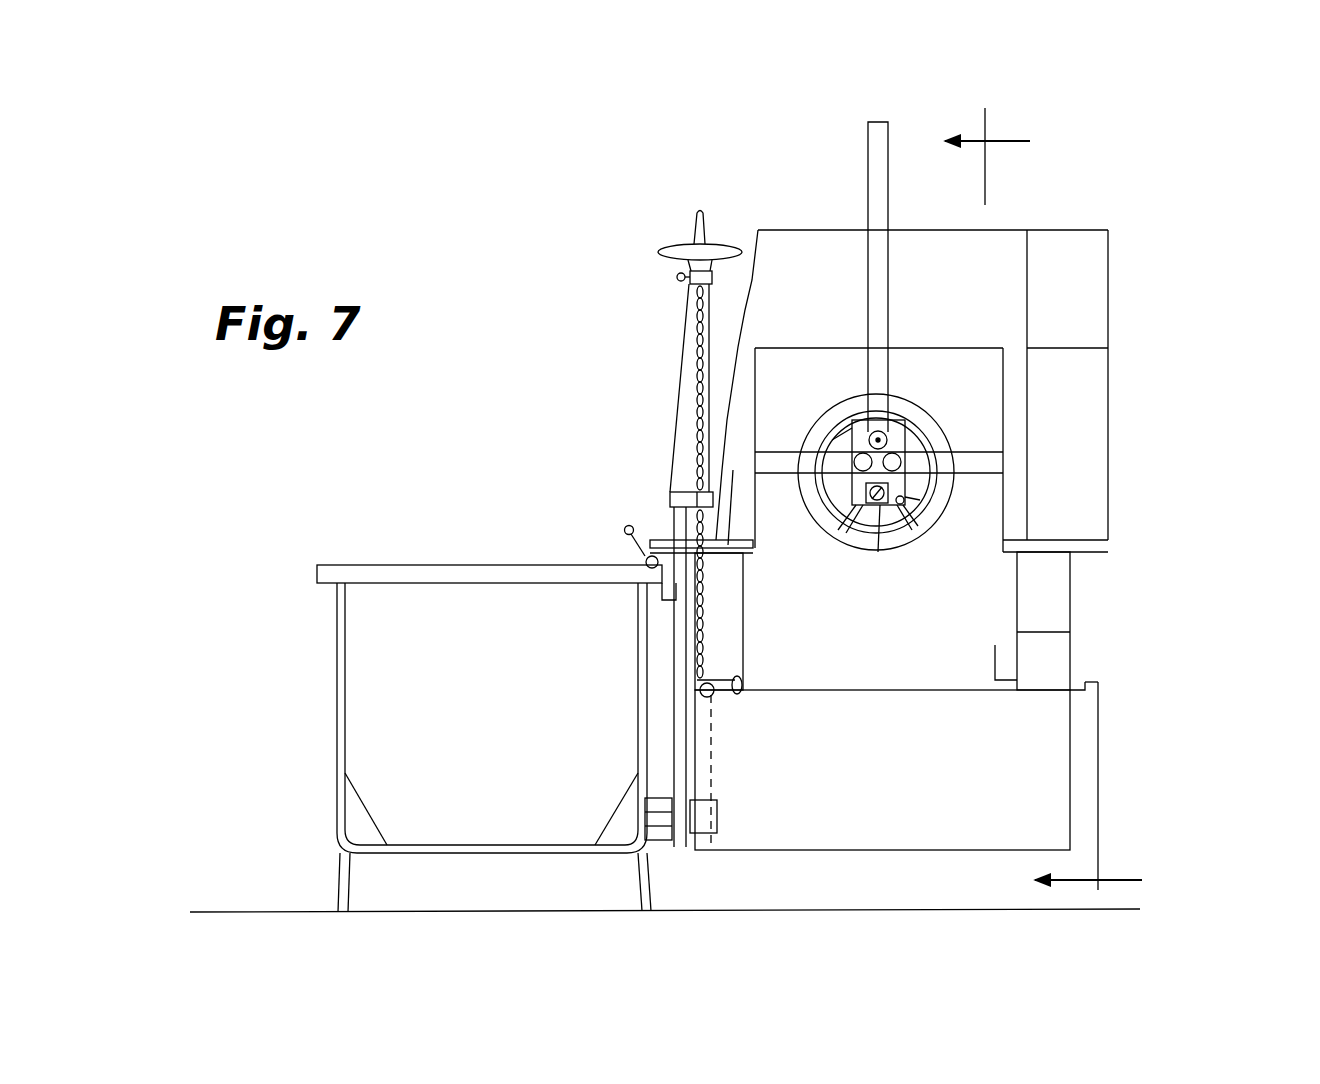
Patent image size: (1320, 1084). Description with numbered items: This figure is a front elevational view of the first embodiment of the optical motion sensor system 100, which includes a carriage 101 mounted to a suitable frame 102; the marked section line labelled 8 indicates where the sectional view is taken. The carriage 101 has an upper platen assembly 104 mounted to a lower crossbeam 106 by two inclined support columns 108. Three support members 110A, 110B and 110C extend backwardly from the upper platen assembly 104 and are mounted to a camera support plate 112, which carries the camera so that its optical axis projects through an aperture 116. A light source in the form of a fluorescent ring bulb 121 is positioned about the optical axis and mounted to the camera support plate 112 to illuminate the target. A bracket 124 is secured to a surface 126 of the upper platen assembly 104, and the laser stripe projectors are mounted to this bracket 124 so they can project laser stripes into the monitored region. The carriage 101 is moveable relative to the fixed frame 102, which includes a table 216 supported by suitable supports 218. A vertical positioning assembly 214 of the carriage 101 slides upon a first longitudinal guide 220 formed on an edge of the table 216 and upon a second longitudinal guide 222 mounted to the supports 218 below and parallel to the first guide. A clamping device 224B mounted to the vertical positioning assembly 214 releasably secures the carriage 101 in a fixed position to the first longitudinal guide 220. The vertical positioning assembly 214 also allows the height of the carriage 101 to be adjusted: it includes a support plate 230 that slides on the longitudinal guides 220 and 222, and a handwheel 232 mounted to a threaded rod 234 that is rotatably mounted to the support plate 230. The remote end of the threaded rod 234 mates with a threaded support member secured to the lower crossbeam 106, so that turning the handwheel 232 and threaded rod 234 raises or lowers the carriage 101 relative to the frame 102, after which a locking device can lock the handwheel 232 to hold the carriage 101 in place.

The optical motion sensor system 100 is at (526, 202).
The carriage 101 is at (1134, 226).
The frame 102 is at (388, 541).
The upper platen assembly 104 is at (1110, 388).
The lower crossbeam 106 is at (900, 690).
The inclined support columns 108 is at (1072, 603).
The support member 110A is at (892, 395).
The support member 110B is at (774, 450).
The support member 110C is at (983, 493).
The camera support plate 112 is at (880, 548).
The aperture 116 is at (890, 492).
The fluorescent ring bulb 121 is at (952, 428).
The bracket 124 is at (890, 155).
The surface 126 is at (963, 292).
The vertical positioning assembly 214 is at (636, 308).
The table 216 is at (478, 562).
The supports 218 is at (347, 683).
The first longitudinal guide 220 is at (660, 590).
The second longitudinal guide 222 is at (640, 857).
The clamping device 224B is at (626, 520).
The support plate 230 is at (668, 450).
The handwheel 232 is at (725, 243).
The threaded rod 234 is at (673, 676).
The section line 8- 8 is at (1060, 503).